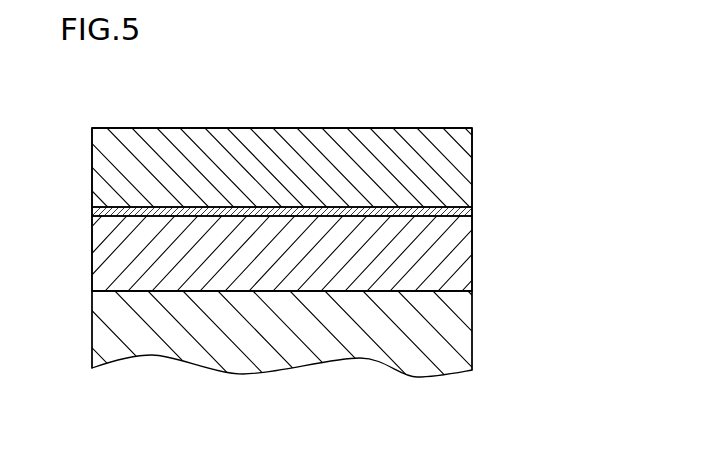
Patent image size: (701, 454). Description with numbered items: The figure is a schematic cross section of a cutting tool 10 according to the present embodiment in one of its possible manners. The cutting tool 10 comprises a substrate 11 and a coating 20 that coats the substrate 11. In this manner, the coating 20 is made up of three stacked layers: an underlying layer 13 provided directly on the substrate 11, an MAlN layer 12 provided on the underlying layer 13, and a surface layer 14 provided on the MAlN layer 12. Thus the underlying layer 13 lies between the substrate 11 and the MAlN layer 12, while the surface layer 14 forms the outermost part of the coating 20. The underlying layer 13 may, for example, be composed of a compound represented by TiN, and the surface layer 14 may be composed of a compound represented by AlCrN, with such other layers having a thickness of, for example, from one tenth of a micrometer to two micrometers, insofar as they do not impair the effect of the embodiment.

The cutting tool 10 is at (475, 104).
The substrate 11 is at (457, 338).
The MAlN layer 12 is at (457, 209).
The underlying layer 13 is at (457, 255).
The surface layer 14 is at (457, 167).
The coating 20 is at (548, 158).